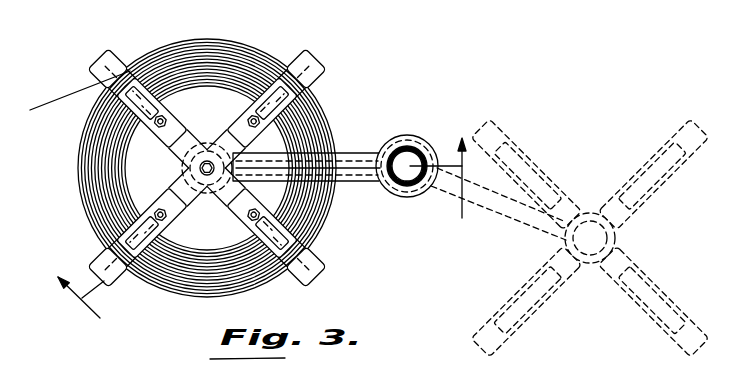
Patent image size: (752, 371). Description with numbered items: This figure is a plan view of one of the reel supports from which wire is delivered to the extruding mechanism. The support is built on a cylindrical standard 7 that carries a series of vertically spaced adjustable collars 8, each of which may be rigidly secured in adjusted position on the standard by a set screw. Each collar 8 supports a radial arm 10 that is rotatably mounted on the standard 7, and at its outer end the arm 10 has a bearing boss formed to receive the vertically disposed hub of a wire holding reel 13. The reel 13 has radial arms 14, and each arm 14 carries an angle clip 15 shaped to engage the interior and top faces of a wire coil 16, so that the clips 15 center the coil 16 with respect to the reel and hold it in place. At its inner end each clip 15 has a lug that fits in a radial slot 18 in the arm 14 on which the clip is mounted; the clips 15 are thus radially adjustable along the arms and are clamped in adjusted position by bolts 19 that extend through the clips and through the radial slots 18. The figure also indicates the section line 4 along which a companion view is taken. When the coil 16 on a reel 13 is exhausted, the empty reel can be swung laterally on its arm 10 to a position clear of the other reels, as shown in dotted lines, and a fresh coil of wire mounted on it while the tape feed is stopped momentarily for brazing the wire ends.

The section line 4- 4 is at (30, 108).
The cylindrical standard 7 is at (408, 143).
The adjustable collar 8 is at (390, 141).
The radial arm 10 is at (360, 183).
The wire holding reel 13 is at (208, 146).
The radial arm 14 is at (322, 63).
The angle clip 15 is at (177, 218).
The wire coil 16 is at (242, 52).
The radial slot 18 is at (184, 188).
The bolt 19 is at (153, 202).